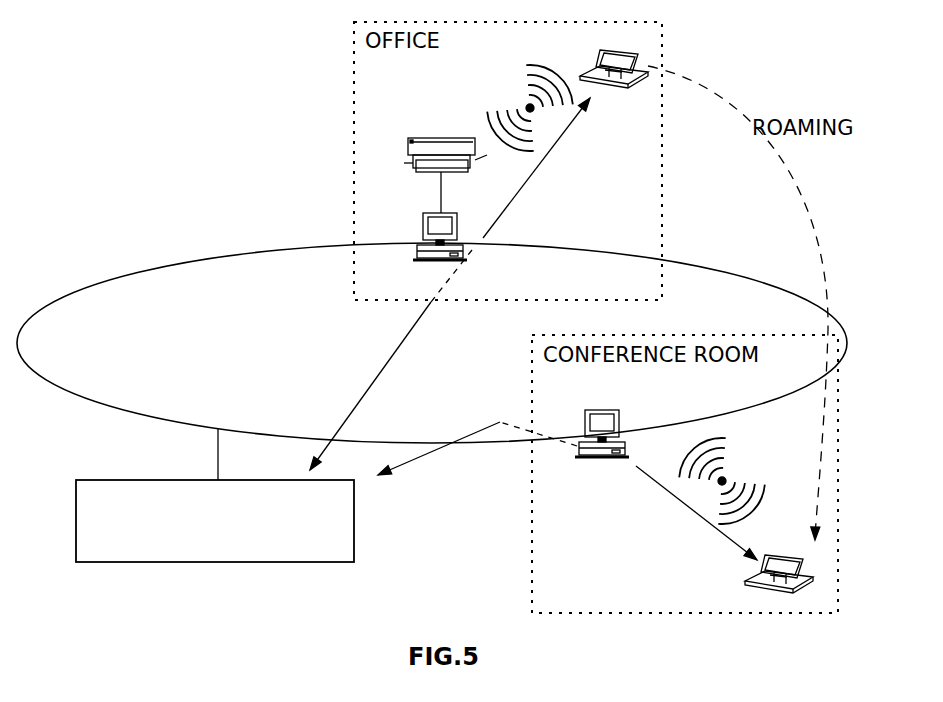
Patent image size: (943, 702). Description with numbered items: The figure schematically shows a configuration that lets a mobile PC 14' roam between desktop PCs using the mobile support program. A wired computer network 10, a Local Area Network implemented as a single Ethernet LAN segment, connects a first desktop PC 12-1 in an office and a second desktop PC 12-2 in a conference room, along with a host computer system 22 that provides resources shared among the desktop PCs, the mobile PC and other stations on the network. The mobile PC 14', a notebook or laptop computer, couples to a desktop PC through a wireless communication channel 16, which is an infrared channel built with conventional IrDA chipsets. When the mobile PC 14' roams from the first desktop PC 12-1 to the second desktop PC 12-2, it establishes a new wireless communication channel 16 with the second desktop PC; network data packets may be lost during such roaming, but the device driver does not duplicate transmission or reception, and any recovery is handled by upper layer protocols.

The wired computer network 10 is at (727, 272).
The host computer system 22 is at (356, 513).
The desktop PC 12-1 is at (423, 219).
The desktop PC 12-2 is at (620, 410).
The wireless communication channel 16 is at (519, 96).
The mobile PC 14' is at (686, 320).